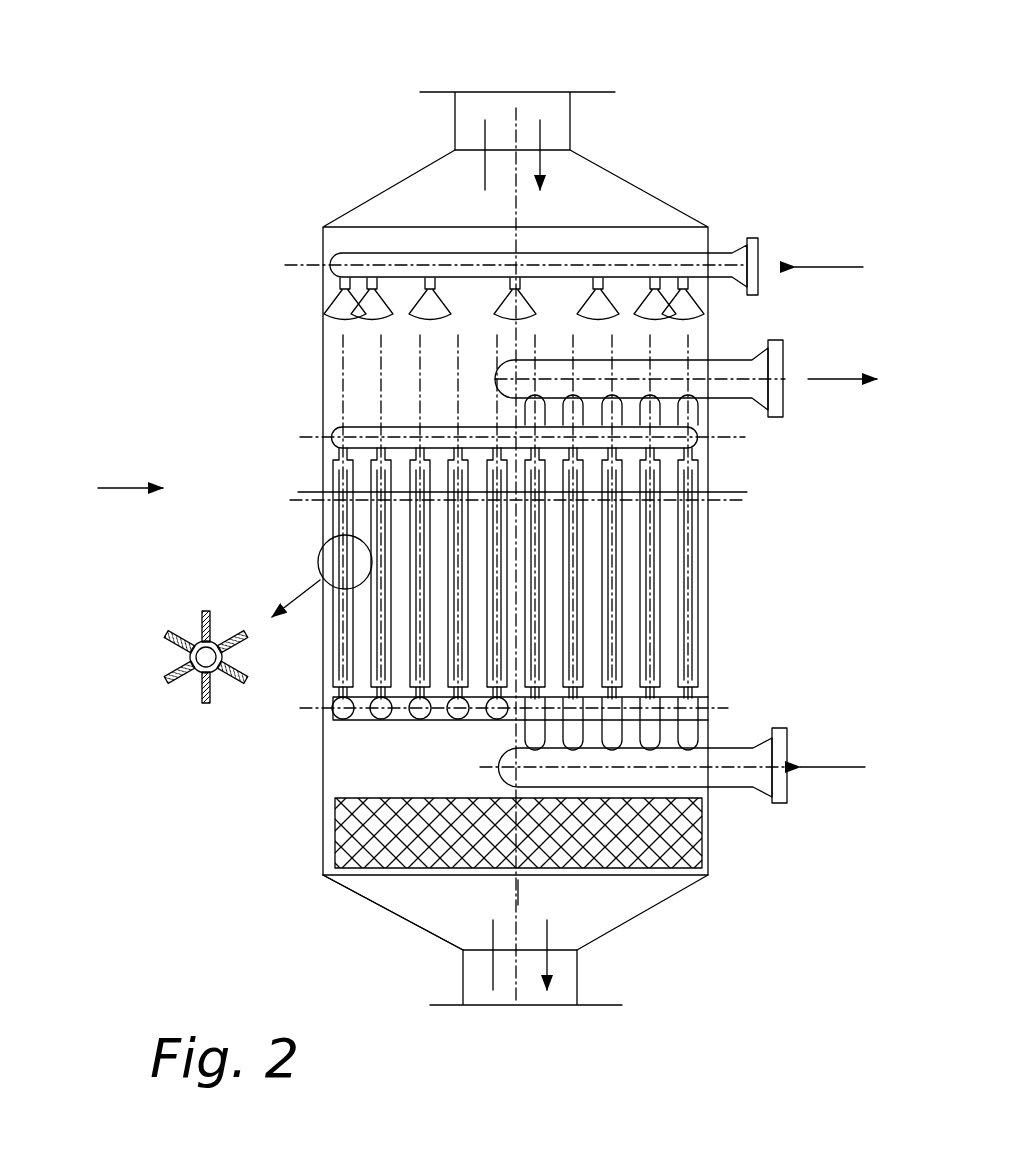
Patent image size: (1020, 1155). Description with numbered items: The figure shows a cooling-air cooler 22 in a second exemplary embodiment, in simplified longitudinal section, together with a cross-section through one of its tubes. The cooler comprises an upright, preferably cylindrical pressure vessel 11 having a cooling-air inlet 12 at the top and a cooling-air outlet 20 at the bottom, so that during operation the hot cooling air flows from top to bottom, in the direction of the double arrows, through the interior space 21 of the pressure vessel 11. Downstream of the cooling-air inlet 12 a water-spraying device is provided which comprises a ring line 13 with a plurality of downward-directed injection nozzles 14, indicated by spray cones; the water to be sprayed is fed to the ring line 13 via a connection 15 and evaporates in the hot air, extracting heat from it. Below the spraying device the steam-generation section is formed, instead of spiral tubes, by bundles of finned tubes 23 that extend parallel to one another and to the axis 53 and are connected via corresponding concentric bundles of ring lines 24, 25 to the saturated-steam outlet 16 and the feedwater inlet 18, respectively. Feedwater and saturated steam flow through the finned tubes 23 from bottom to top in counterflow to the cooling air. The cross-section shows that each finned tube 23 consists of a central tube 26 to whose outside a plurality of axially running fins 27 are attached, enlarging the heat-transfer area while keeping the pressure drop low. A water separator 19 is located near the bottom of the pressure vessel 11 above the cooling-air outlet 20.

In FIG. 2, the pressure vessel 11 is at (709, 605).
In FIG. 2, the cooling-air inlet 12 is at (540, 100).
In FIG. 2, the ring line 13 is at (330, 260).
In FIG. 2, the injection nozzles 14 is at (340, 288).
In FIG. 2, the connection 15 is at (753, 252).
In FIG. 2, the saturated-steam outlet 16 is at (776, 358).
In FIG. 2, the feedwater inlet 18 is at (780, 736).
In FIG. 2, the water separator 19 is at (705, 858).
In FIG. 2, the cooling-air outlet 20 is at (573, 987).
In FIG. 2, the interior space 21 is at (340, 796).
In FIG. 2, the cooling-air cooler 22 is at (100, 488).
In FIG. 2, the finned tubes 23 is at (692, 558).
In FIG. 2a, the finned tubes 23 is at (161, 680).
In FIG. 2, the ring lines 24 is at (332, 436).
In FIG. 2, the ring lines 25 is at (335, 712).
In FIG. 2a, the central tube 26 is at (192, 659).
In FIG. 2a, the fins 27 is at (184, 638).
In FIG. 2, the axis 53 is at (520, 905).